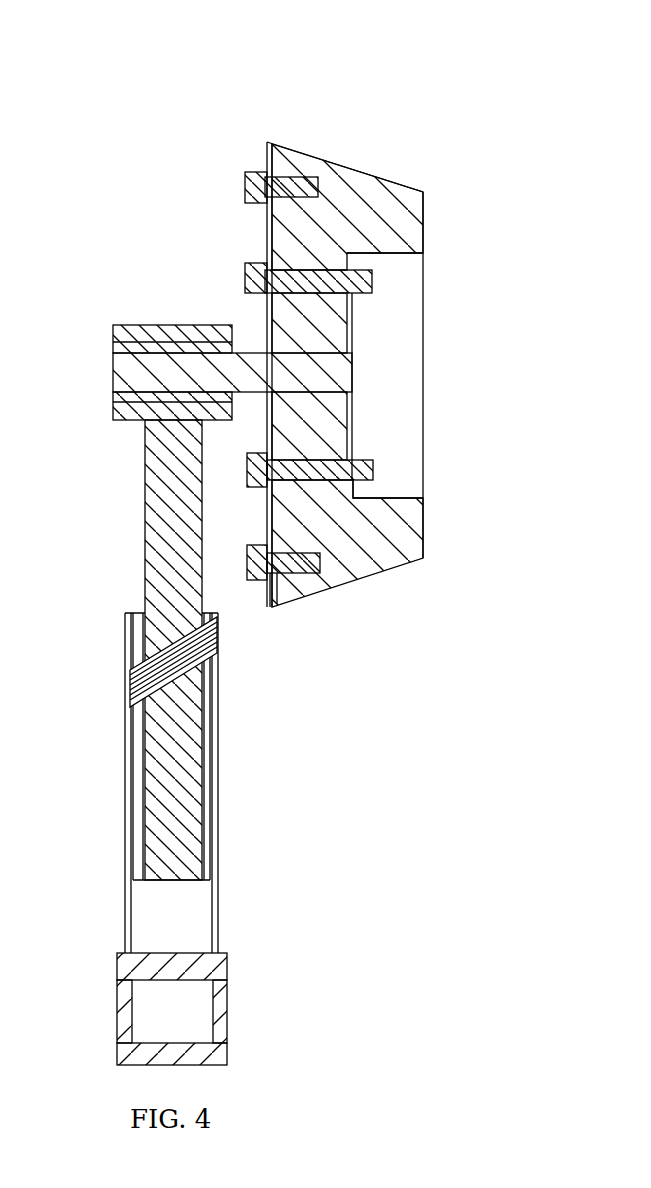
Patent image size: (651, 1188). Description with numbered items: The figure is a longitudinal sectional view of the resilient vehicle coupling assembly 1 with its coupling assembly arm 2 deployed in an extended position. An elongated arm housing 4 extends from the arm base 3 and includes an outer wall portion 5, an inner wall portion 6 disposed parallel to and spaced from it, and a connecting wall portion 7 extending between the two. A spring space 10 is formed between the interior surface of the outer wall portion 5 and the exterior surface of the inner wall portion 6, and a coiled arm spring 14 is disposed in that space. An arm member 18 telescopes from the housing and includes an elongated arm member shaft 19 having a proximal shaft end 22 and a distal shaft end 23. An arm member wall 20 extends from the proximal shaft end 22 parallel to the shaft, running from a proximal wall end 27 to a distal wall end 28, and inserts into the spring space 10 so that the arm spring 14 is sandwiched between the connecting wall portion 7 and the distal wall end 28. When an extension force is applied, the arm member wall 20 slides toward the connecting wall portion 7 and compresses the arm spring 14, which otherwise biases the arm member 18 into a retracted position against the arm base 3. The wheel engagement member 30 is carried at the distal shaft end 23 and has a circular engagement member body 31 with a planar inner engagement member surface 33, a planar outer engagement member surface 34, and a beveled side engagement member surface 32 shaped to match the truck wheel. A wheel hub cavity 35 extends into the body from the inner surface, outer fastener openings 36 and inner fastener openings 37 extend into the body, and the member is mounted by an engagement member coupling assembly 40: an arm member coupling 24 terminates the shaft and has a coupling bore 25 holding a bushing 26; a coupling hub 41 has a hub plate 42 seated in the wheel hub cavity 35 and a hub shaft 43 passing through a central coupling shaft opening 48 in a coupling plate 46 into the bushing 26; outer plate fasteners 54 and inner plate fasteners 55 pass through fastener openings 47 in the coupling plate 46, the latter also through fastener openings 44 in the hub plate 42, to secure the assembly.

The vehicle coupling assembly 1 is at (122, 112).
The coupling assembly arm 2 is at (155, 762).
The arm base 3 is at (228, 1010).
The arm housing 4 is at (110, 800).
The outer wall portion 5 is at (123, 690).
The inner wall portion 6 is at (127, 772).
The connecting wall portion 7 is at (128, 612).
The spring space 10 is at (127, 627).
The arm spring 14 is at (212, 725).
The arm member 18 is at (135, 512).
The arm member shaft 19 is at (143, 542).
The arm member wall 20 is at (127, 847).
The proximal shaft end 22 is at (138, 905).
The distal shaft end 23 is at (142, 420).
The arm member coupling 24 is at (134, 325).
The coupling bore 25 is at (112, 358).
The bushing 26 is at (163, 328).
The proximal wall end 27 is at (125, 893).
The distal wall end 28 is at (215, 690).
The wheel engagement member 30 is at (251, 372).
The engagement member body 31 is at (360, 183).
The side engagement member surface 32 is at (382, 573).
The inner engagement member surface 33 is at (423, 208).
The outer engagement member surface 34 is at (265, 242).
The wheel hub cavity 35 is at (395, 497).
The outer fastener openings 36 is at (305, 175).
The inner fastener openings 37 is at (368, 283).
The engagement member coupling assembly 40 is at (258, 147).
The coupling hub 41 is at (366, 345).
The hub plate 42 is at (352, 430).
The hub shaft 43 is at (275, 378).
The fastener openings 44 is at (375, 262).
The coupling plate 46 is at (270, 140).
The fastener openings 47 is at (245, 178).
The central coupling shaft opening 48 is at (268, 352).
The outer plate fasteners 54 is at (247, 186).
The inner plate fasteners 55 is at (245, 268).